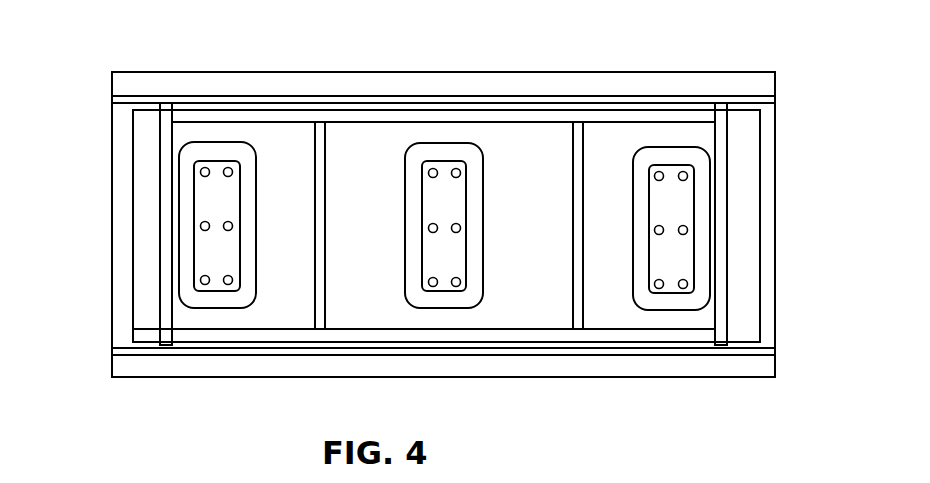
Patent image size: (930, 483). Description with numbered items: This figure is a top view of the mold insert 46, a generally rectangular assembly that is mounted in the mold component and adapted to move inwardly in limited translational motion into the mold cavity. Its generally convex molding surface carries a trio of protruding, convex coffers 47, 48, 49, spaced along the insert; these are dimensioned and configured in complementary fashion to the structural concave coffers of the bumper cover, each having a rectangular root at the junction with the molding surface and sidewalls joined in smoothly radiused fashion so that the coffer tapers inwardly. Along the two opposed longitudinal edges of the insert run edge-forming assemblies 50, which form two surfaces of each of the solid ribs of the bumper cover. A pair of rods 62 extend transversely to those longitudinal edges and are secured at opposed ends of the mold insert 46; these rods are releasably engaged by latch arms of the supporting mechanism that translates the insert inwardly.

The mold insert 46 is at (798, 58).
The coffer 47 is at (208, 260).
The coffer 48 is at (454, 257).
The coffer 49 is at (680, 263).
The edge-forming assembly 50 is at (577, 82).
The rod 62 is at (160, 175).